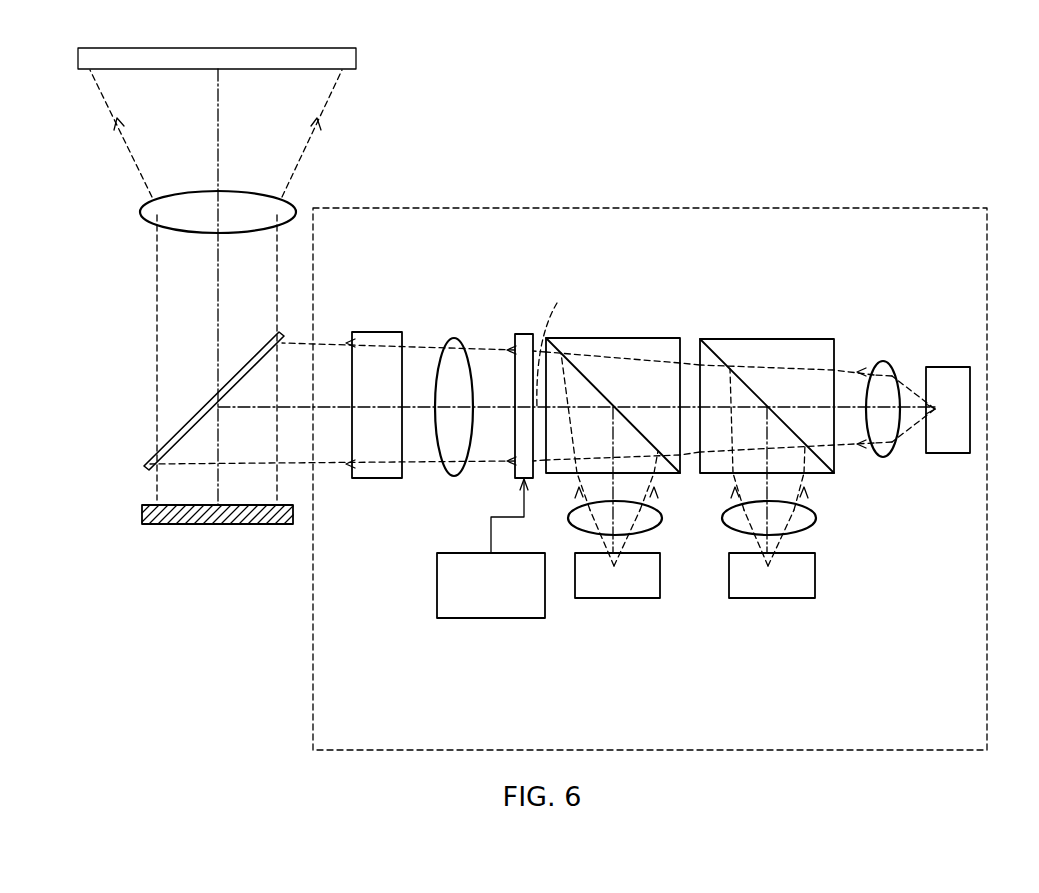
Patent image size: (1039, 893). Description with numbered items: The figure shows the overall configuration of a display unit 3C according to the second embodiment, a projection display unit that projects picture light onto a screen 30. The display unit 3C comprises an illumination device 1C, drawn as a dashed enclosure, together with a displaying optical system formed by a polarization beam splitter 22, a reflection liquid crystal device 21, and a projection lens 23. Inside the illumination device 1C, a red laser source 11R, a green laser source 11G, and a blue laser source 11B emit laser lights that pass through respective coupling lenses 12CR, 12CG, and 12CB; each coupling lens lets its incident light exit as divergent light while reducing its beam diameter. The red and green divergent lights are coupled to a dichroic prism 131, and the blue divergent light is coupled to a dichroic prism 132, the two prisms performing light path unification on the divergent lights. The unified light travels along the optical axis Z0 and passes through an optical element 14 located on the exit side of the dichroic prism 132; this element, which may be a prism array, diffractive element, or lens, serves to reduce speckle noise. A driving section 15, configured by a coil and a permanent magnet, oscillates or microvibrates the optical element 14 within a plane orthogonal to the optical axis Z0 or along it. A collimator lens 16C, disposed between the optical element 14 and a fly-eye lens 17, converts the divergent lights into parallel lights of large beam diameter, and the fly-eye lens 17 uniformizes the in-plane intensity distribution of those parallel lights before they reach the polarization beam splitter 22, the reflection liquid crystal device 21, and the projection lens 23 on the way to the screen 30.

The illumination device 1C is at (594, 207).
The display unit 3C is at (941, 136).
The screen 30 is at (356, 58).
The projection lens 23 is at (141, 212).
The polarization beam splitter 22 is at (150, 464).
The reflection liquid crystal device 21 is at (190, 526).
The fly-eye lens 17 is at (378, 332).
The collimator lens 16C is at (452, 477).
The optical element 14 is at (520, 334).
The optical axis Z0 is at (552, 345).
The dichroic prism 132 is at (614, 338).
The dichroic prism 131 is at (766, 339).
The coupling lens 12CR is at (881, 361).
The red laser source 11R is at (949, 453).
The coupling lens 12CB is at (658, 530).
The blue laser source 11B is at (617, 599).
The coupling lens 12CG is at (812, 518).
The green laser source 11G is at (772, 599).
The driving section 15 is at (491, 619).